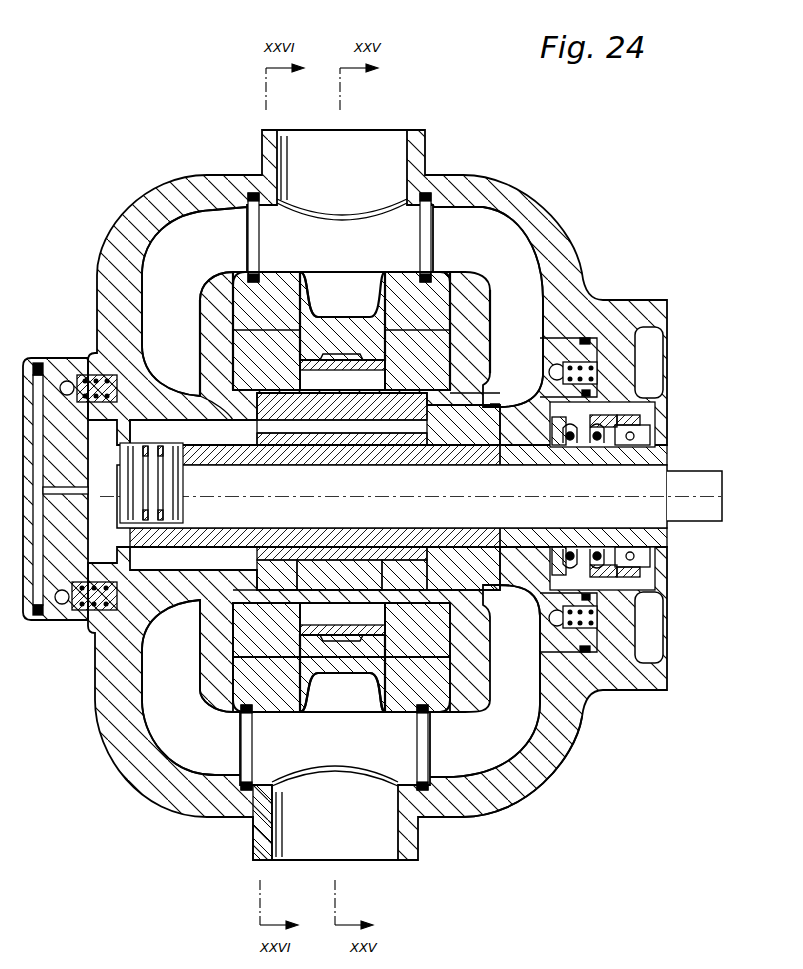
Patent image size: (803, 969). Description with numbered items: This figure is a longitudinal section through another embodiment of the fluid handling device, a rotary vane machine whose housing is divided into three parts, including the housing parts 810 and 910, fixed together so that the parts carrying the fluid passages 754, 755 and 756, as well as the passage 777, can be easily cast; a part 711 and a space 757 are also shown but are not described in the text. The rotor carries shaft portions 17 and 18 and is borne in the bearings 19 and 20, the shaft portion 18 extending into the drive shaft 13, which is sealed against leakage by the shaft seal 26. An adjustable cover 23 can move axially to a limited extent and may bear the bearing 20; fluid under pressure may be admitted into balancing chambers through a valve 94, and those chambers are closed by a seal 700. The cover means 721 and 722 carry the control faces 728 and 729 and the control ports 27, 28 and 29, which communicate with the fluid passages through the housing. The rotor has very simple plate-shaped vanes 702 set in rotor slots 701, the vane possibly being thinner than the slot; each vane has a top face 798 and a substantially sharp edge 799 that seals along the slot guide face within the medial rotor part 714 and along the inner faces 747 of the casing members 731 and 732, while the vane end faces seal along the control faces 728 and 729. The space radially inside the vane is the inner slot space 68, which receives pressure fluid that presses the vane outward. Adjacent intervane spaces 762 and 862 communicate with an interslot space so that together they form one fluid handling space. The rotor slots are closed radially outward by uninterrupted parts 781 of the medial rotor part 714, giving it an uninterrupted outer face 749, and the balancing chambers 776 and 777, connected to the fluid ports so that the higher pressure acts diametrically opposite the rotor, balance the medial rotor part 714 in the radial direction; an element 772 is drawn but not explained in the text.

The upper housing body 711 is at (232, 178).
The seal 700 is at (650, 617).
The balancing chamber 777 is at (372, 168).
The balancing chamber 776 is at (347, 330).
The passage 754 is at (178, 252).
The passage 756 is at (498, 266).
The passage 755 is at (186, 734).
The lower right chamber 757 is at (488, 744).
The cover means 721 is at (245, 357).
The cover means 722 is at (440, 360).
The control face 728 is at (266, 331).
The control face 729 is at (417, 331).
The uninterrupted outer face 749 is at (318, 300).
The uninterrupted part 781 is at (372, 358).
The seal strip 772 is at (318, 381).
The control port 27 is at (230, 396).
The control port 28 is at (445, 396).
The shaft seal 26 is at (652, 426).
The drive shaft 13 is at (695, 478).
The bearing 19 is at (183, 455).
The shaft portion 17 is at (225, 446).
The sharp vane edge 799 is at (310, 392).
The inner slot space 68 is at (307, 428).
The vane 702 is at (337, 433).
The top face 798 is at (367, 440).
The rotor slot 701 is at (398, 452).
The shaft portion 18 is at (505, 467).
The bearing 20 is at (532, 452).
The intervane space 762 is at (270, 565).
The inner face 747 is at (290, 572).
The intervane space 862 is at (425, 580).
The control port 29 is at (235, 599).
The medial rotor part 714 is at (340, 622).
The valve 94 is at (548, 616).
The adjustable cover 23 is at (553, 645).
The casing member 731 is at (310, 690).
The casing member 732 is at (352, 690).
The housing part 810 is at (262, 826).
The housing part 910 is at (465, 800).